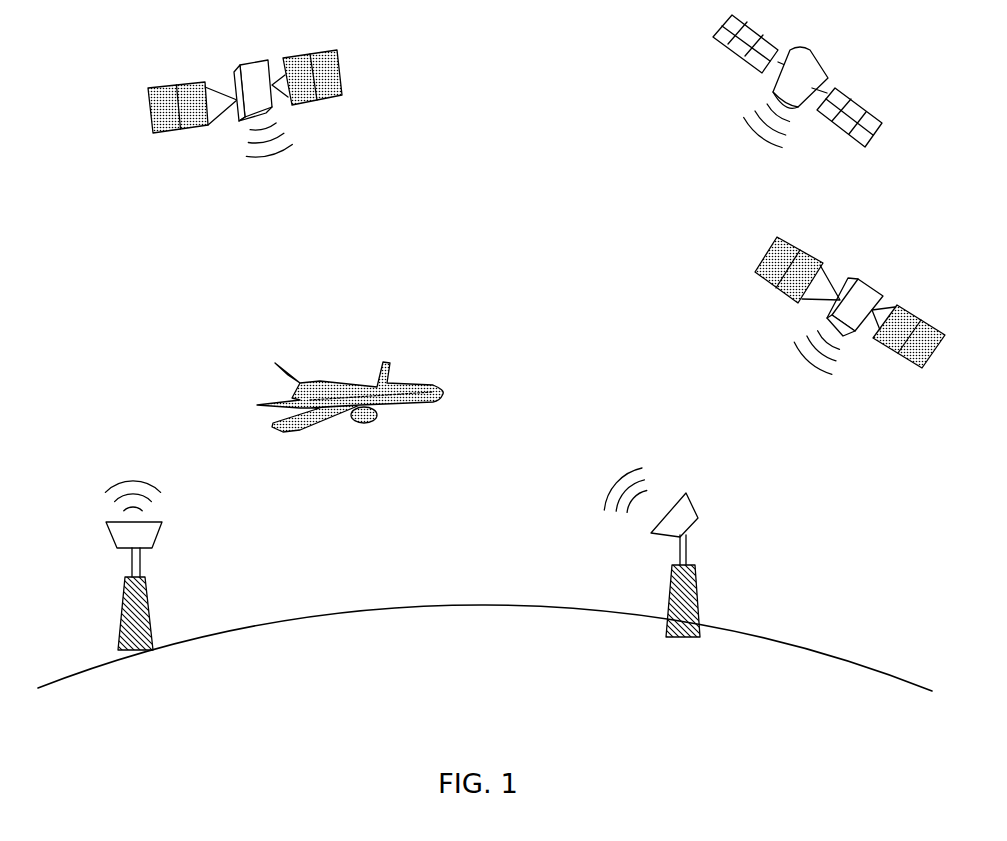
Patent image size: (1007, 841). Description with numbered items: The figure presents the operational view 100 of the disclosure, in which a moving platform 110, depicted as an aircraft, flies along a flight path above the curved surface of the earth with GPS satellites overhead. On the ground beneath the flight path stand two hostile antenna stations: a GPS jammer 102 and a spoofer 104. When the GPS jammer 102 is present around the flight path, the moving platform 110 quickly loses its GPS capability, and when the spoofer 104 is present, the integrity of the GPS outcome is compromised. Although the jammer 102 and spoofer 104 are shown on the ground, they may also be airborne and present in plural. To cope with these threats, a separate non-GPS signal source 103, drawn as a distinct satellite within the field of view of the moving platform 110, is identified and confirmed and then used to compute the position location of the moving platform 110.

The operational view 100 is at (136, 245).
The GPS jammer 102 is at (698, 597).
The non-GPS signal source 103 is at (817, 60).
The spoofer 104 is at (152, 610).
The moving platform 110 is at (413, 382).